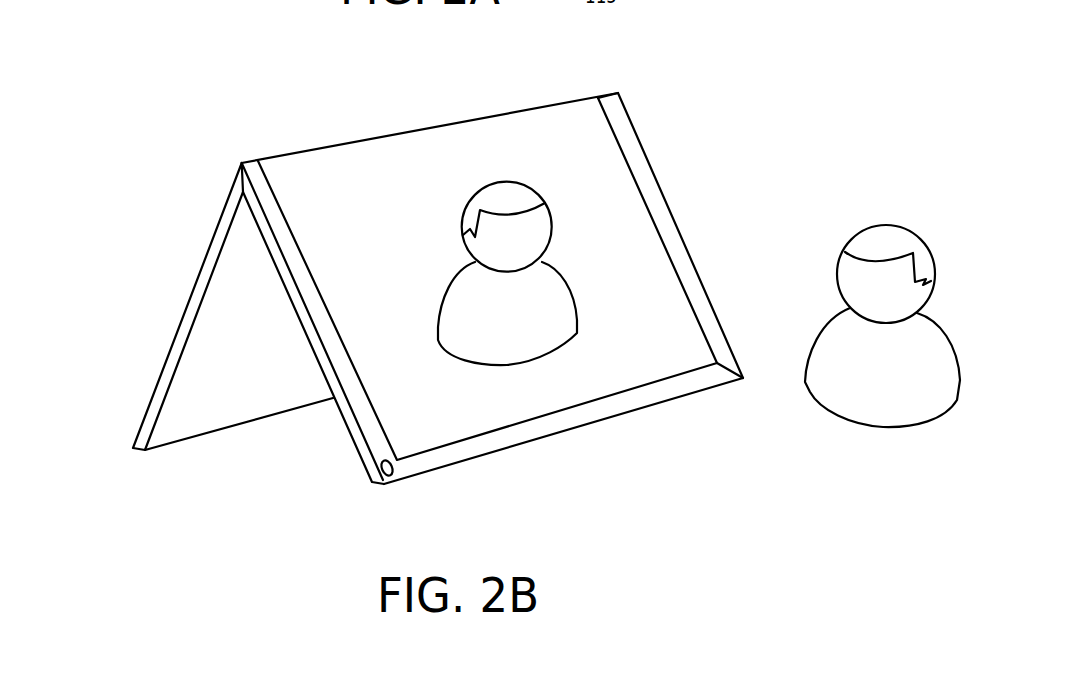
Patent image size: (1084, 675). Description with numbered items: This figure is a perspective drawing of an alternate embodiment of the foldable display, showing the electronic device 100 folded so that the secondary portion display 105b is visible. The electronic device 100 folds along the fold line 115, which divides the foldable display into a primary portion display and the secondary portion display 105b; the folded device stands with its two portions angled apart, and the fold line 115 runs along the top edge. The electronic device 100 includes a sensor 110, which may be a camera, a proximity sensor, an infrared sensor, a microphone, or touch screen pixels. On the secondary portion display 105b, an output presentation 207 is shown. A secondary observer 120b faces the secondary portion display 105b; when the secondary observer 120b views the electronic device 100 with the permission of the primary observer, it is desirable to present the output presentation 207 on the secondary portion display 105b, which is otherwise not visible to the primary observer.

The electronic device 100 is at (116, 174).
The secondary portion display 105b is at (617, 290).
The sensor 110 is at (382, 484).
The fold line 115 is at (569, 102).
The output presentation 207 is at (532, 235).
The secondary observer 120b is at (905, 237).